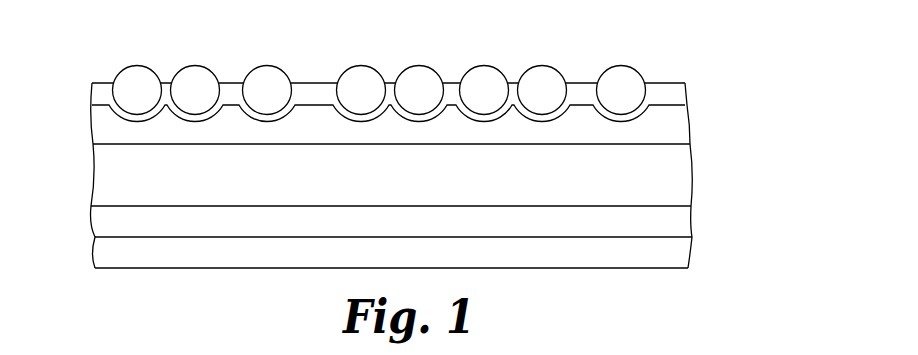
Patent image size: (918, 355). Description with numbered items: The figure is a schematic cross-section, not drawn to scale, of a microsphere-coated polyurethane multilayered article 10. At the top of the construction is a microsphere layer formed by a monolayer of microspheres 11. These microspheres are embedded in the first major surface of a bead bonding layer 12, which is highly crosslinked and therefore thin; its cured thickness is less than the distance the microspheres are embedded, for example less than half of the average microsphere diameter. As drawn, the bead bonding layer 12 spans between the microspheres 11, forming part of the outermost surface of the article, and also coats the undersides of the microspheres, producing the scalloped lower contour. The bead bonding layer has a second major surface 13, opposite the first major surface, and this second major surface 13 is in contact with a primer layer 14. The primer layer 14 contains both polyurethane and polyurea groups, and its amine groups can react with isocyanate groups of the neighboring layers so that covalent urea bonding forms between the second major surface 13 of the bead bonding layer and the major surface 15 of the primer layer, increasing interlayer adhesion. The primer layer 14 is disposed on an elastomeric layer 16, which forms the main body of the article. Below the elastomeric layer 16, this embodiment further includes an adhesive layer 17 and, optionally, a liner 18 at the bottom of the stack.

The multilayered article 10 is at (401, 139).
The microspheres 11 is at (602, 80).
The bead bonding layer 12 is at (392, 100).
The second major surface 13 is at (101, 106).
The primer layer 14 is at (398, 143).
The major surface of the primer layer 15 is at (120, 145).
The elastomeric layer 16 is at (680, 175).
The adhesive layer 17 is at (680, 223).
The liner 18 is at (680, 257).